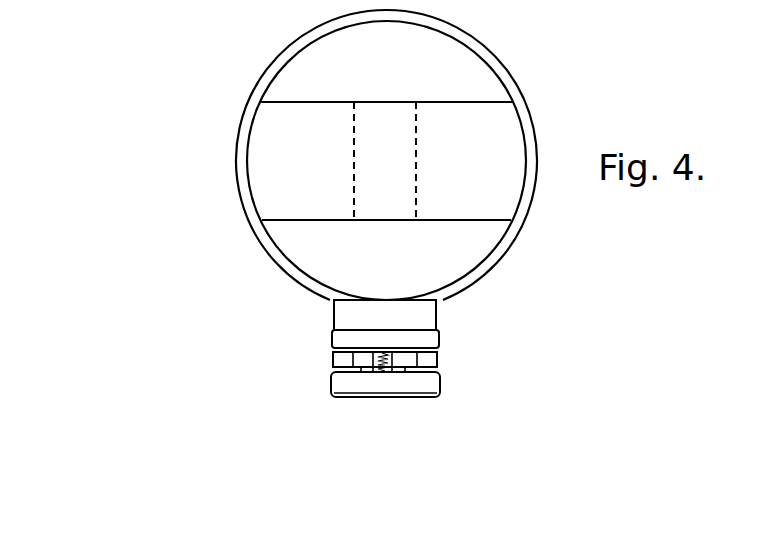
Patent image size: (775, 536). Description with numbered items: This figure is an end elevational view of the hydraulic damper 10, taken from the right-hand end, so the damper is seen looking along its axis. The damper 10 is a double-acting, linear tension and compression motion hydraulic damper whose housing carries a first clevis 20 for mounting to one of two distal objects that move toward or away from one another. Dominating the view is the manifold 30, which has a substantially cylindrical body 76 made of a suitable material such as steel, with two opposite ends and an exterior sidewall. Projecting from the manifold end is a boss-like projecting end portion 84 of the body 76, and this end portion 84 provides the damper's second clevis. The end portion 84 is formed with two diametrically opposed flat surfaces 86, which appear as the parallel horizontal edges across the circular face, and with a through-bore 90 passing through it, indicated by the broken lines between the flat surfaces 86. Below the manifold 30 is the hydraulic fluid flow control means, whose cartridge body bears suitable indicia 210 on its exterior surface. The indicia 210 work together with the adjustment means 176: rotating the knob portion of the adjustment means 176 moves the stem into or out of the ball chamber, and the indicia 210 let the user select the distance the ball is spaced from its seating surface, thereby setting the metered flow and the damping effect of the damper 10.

The hydraulic damper 10 is at (227, 241).
The first clevis 20 is at (390, 102).
The manifold 30 is at (499, 53).
The cylindrical body 76 is at (528, 107).
The boss-like projecting end portion 84 is at (466, 170).
The flat surface 86 is at (338, 102).
The through-bore 90 is at (356, 153).
The adjustment means 176 is at (443, 386).
The indicia 210 is at (440, 340).